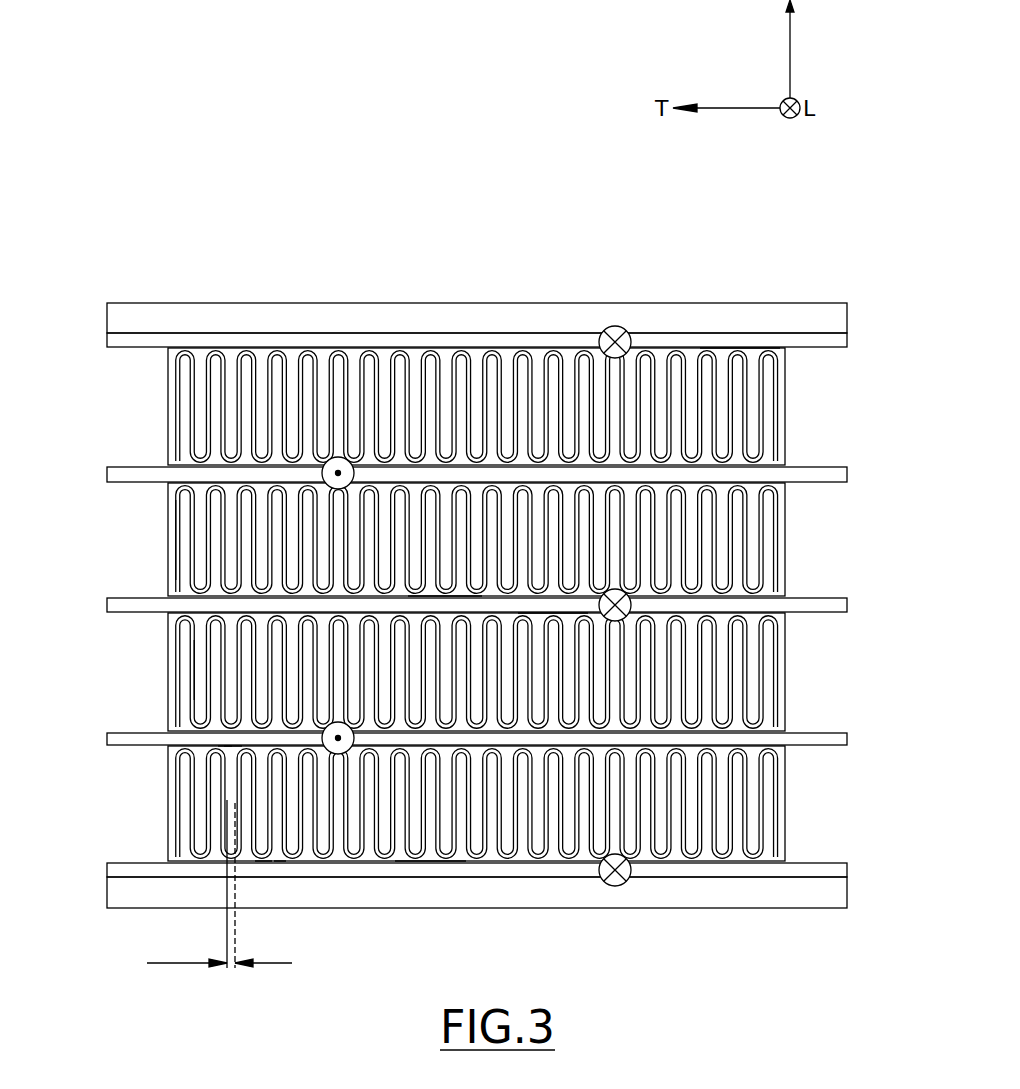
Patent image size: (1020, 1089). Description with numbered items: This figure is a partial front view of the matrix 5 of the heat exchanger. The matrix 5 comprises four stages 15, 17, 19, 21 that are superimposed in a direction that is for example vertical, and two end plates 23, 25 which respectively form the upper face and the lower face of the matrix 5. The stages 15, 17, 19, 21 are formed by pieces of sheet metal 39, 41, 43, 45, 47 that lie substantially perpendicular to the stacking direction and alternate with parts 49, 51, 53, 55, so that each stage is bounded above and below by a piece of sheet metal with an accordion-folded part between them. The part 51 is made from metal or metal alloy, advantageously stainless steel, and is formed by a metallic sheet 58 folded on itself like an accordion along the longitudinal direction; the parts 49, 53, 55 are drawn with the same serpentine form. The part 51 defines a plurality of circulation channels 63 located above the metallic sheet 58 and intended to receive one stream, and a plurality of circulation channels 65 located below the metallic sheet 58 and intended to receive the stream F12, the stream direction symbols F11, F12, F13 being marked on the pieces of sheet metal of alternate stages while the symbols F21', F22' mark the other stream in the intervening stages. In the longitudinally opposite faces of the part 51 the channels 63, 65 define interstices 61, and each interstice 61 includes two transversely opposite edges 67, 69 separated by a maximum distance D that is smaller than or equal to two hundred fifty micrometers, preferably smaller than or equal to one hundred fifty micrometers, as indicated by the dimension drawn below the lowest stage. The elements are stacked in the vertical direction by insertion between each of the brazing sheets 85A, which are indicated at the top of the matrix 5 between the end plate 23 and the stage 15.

The matrix 5 is at (130, 196).
The stage 15 is at (545, 404).
The stage 17 is at (546, 539).
The stage 19 is at (540, 659).
The stage 21 is at (542, 800).
The end plate 23 is at (833, 320).
The end plate 25 is at (812, 895).
The piece of sheet metal 39 is at (120, 340).
The piece of sheet metal 41 is at (120, 474).
The piece of sheet metal 43 is at (120, 605).
The piece of sheet metal 45 is at (120, 740).
The piece of sheet metal 47 is at (120, 870).
The part 49 is at (785, 418).
The part 51 is at (785, 538).
The part 53 is at (785, 694).
The part 55 is at (785, 825).
The metallic sheet 58 is at (200, 676).
The interstice 61 is at (462, 843).
The circulation channel 63 is at (478, 528).
The circulation channel 65 is at (583, 573).
The edge 67 is at (233, 808).
The edge 69 is at (229, 803).
The brazing sheet 85A is at (775, 375).
The first fluid flow direction F11 is at (614, 326).
The stream F12 is at (631, 601).
The first fluid flow direction F13 is at (615, 886).
The second fluid flow direction F21' is at (230, 454).
The second fluid flow direction F22' is at (224, 724).
The maximum distance D is at (219, 884).